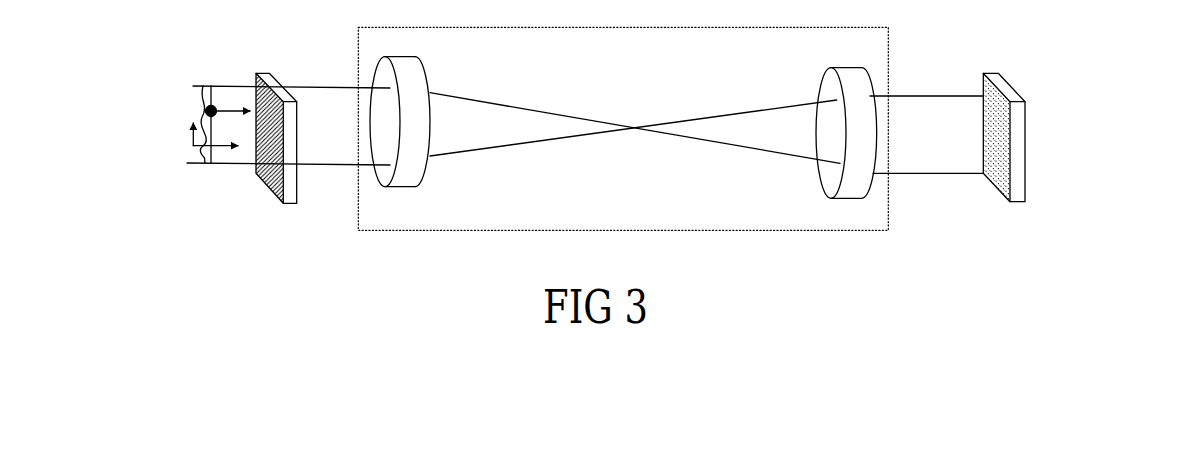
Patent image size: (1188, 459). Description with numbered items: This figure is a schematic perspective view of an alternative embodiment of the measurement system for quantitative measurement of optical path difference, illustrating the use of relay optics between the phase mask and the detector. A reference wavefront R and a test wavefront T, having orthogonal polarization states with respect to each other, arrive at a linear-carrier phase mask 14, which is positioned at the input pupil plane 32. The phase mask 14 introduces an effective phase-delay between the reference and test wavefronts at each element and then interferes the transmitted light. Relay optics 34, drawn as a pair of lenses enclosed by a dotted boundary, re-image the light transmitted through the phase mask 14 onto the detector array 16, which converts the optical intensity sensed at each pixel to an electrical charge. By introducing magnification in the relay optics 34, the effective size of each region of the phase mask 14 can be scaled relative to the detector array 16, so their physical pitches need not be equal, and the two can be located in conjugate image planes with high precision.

The linear-carrier phase mask 14 is at (267, 157).
The input pupil plane 32 is at (282, 127).
The relay optics 34 is at (629, 160).
The detector array 16 is at (1028, 164).
The reference wavefront R is at (221, 110).
The test wavefront T is at (216, 142).